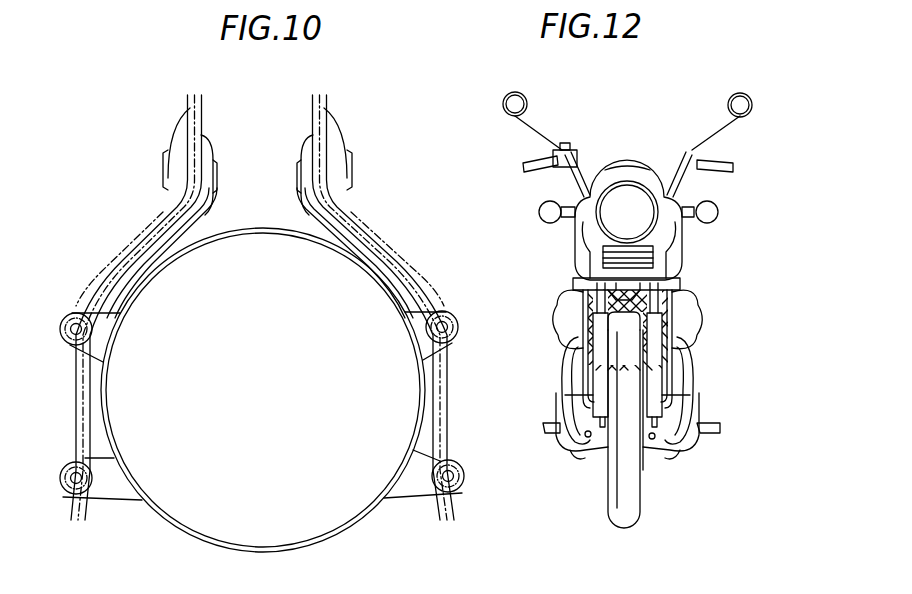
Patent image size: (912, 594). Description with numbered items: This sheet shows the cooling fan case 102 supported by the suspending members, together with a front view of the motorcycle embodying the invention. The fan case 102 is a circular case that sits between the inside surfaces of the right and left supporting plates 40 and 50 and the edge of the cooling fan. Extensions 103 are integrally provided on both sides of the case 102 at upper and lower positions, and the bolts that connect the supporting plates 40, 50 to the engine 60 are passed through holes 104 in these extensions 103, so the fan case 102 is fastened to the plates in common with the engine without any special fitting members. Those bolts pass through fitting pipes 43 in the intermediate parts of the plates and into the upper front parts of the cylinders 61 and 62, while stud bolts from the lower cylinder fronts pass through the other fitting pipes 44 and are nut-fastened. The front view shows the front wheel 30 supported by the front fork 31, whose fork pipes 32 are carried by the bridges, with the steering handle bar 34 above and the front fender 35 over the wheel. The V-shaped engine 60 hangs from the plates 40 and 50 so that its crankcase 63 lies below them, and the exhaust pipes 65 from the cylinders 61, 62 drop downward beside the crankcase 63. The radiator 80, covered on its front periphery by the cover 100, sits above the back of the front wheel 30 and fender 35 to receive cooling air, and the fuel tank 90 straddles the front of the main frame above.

In FIG. 12, the front wheel 30 is at (634, 492).
In FIG. 12, the front fork 31 is at (606, 398).
In FIG. 12, the fork pipes 32 is at (600, 285).
In FIG. 12, the steering handle bar 34 is at (678, 160).
In FIG. 12, the front fender 35 is at (643, 284).
In FIG. 10, the supporting plate 40 is at (360, 211).
In FIG. 10, the fitting pipes 43 is at (93, 334).
In FIG. 10, the fitting pipes 44 is at (93, 470).
In FIG. 10, the supporting plate 50 is at (152, 217).
In FIG. 12, the engine 60 is at (700, 339).
In FIG. 12, the cylinder 61 is at (696, 326).
In FIG. 12, the cylinder 62 is at (568, 322).
In FIG. 12, the crankcase 63 is at (673, 444).
In FIG. 12, the exhaust pipes 65 is at (568, 378).
In FIG. 12, the radiator 80 is at (672, 306).
In FIG. 12, the fuel tank 90 is at (670, 241).
In FIG. 12, the cover 100 is at (672, 291).
In FIG. 10, the fan case 102 is at (182, 531).
In FIG. 10, the extensions 103 is at (98, 322).
In FIG. 10, the holes 104 is at (90, 338).